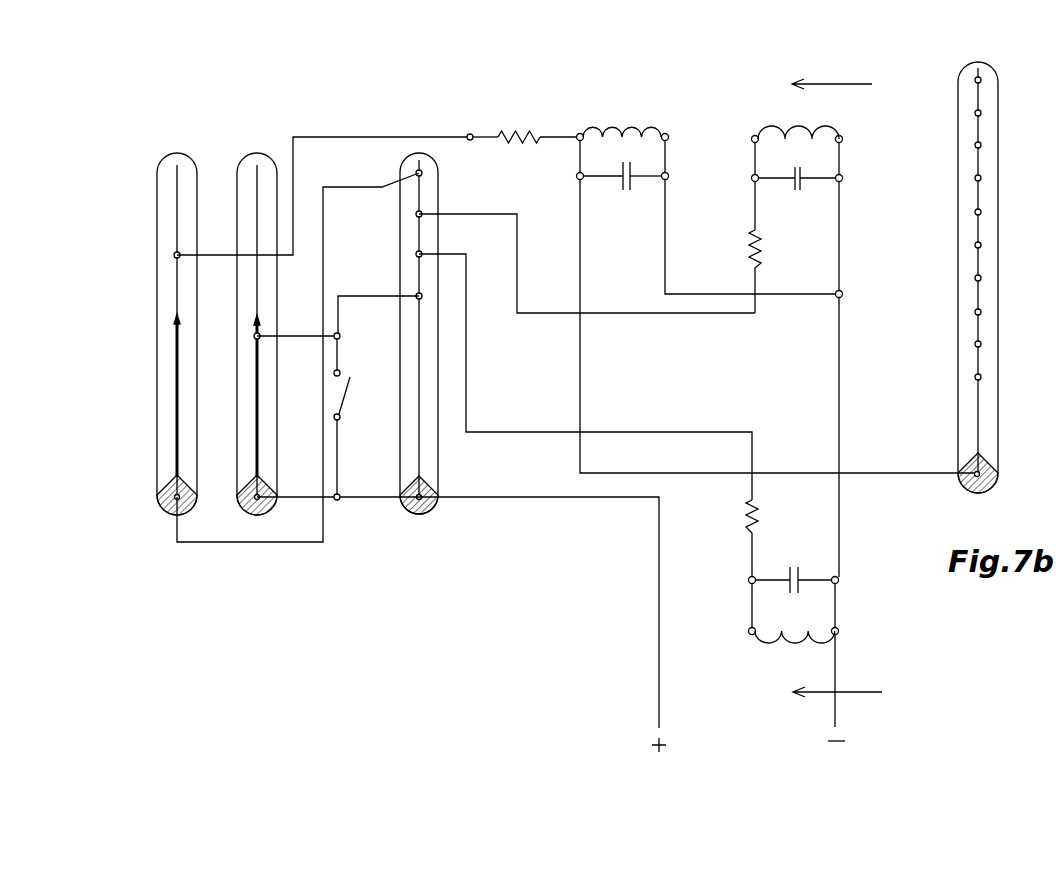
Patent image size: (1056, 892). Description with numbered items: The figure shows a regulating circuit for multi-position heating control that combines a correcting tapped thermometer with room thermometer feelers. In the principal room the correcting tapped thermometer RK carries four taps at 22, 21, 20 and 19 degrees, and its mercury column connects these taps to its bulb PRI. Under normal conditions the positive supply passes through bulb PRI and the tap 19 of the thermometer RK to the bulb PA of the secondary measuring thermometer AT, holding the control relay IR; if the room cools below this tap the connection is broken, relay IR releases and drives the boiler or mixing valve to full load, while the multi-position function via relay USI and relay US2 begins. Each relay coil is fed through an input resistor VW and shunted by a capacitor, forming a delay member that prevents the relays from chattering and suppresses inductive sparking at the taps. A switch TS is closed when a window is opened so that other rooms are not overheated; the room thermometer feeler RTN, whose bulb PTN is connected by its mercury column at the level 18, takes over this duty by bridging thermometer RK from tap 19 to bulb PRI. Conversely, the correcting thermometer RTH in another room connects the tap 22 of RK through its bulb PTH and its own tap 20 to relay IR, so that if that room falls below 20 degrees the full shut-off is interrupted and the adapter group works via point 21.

The correcting room temperature thermometer RTH is at (179, 322).
The room thermometer feeler RTN is at (257, 322).
The correcting tapped thermometer RK is at (427, 326).
The bulb of thermometer RTH PTH is at (195, 495).
The bulb of thermometer RTN PTN is at (276, 495).
The bulb of correcting thermometer PRI is at (437, 495).
The switch TS is at (355, 416).
The input resistor VW is at (648, 319).
The control relay IR is at (623, 145).
The relay USI is at (834, 196).
The relay USII US2 is at (830, 615).
The secondary measuring unit thermometer AT is at (978, 262).
The bulb PA is at (978, 489).
The 22° tap 22 is at (391, 174).
The 21° tap 21 is at (392, 214).
The 20° tap 20 is at (108, 255).
The 19° tap 19 is at (393, 295).
The 18° tap 18 is at (247, 336).